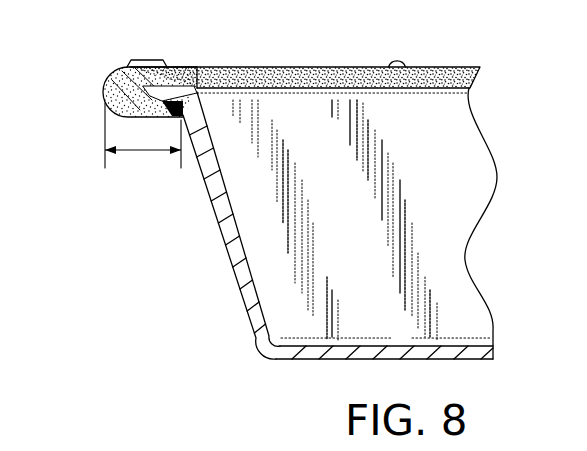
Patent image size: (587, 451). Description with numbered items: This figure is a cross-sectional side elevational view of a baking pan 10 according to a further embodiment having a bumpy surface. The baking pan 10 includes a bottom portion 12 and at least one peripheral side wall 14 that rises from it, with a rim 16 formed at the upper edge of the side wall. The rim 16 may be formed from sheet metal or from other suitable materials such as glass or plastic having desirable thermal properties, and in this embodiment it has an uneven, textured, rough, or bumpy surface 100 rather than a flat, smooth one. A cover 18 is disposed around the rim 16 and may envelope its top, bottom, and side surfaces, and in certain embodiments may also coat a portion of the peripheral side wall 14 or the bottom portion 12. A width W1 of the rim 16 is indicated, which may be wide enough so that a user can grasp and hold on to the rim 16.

The baking pan 10 is at (183, 378).
The bottom portion 12 is at (493, 360).
The peripheral side wall 14 is at (232, 270).
The rim 16 is at (168, 82).
The cover 18 is at (105, 92).
The bumpy surface 100 is at (137, 87).
The width of the rim W1 is at (143, 161).